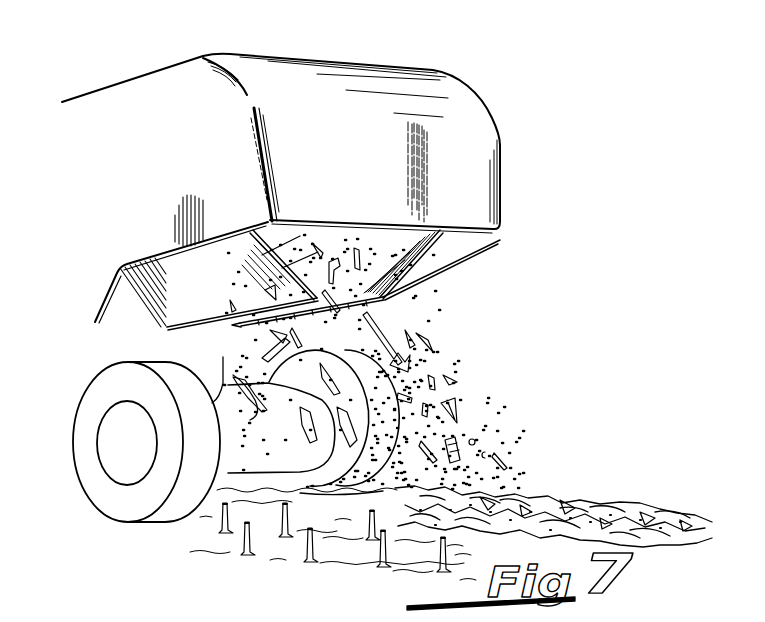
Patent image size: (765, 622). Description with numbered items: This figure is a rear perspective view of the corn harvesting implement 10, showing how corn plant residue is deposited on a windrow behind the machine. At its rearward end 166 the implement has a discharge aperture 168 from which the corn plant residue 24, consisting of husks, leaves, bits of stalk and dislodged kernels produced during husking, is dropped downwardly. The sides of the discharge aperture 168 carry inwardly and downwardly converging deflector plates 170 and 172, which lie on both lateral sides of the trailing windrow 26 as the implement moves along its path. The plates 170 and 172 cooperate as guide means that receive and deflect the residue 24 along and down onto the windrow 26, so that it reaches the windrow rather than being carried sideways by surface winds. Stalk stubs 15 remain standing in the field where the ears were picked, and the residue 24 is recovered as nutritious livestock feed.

The corn harvesting implement 10 is at (492, 79).
The stalk stubs 15 is at (288, 532).
The corn plant residue 24 is at (446, 376).
The windrow 26 is at (572, 502).
The rearward end 166 is at (499, 133).
The discharge aperture 168 is at (465, 240).
The deflector plate 170 is at (163, 310).
The deflector plate 172 is at (393, 287).